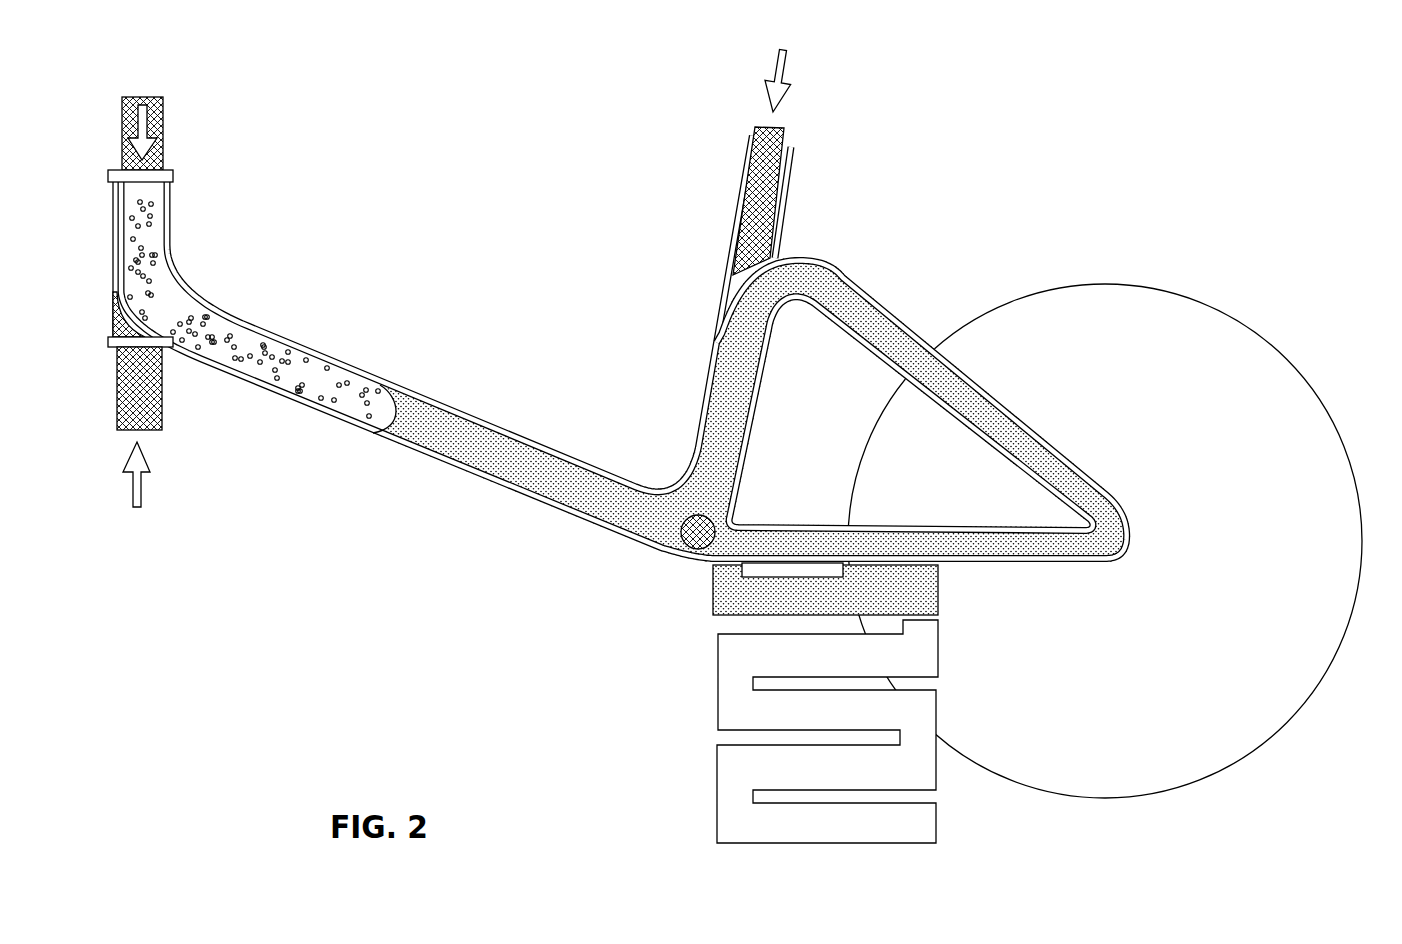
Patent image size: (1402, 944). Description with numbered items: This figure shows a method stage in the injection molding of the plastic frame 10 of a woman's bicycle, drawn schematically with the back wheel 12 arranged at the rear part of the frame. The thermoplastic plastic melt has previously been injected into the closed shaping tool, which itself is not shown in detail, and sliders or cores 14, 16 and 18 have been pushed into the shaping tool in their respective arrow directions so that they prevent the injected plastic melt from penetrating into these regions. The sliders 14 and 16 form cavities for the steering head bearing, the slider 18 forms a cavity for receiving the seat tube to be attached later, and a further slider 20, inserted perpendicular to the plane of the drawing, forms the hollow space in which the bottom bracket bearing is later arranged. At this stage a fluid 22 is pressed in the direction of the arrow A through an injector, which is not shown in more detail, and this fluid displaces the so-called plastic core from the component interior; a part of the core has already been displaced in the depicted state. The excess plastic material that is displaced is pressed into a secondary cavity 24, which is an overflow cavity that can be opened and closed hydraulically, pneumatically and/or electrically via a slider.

The frame 10 is at (415, 458).
The back wheel 12 is at (1156, 284).
The slider 14 is at (163, 107).
The arrow A is at (170, 143).
The slider 16 is at (147, 398).
The slider 18 is at (760, 173).
The slider 20 is at (678, 555).
The fluid 22 is at (143, 232).
The secondary cavity 24 is at (732, 691).